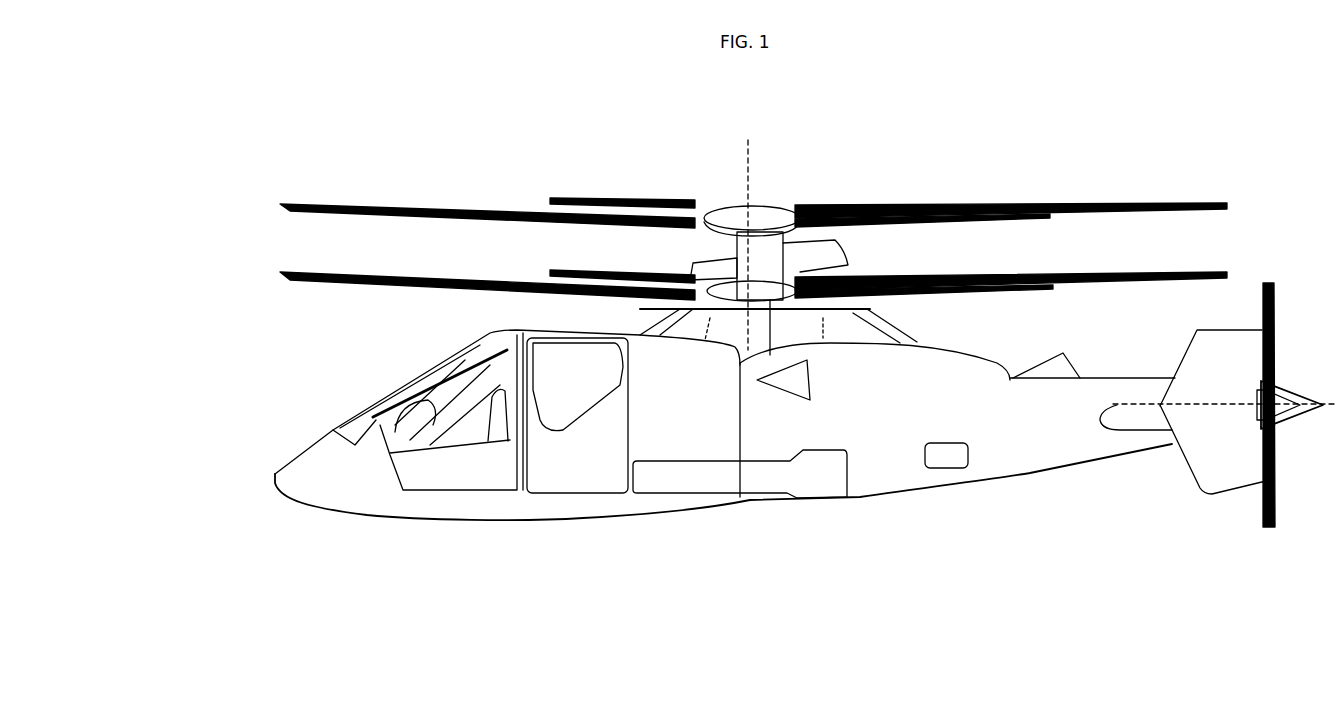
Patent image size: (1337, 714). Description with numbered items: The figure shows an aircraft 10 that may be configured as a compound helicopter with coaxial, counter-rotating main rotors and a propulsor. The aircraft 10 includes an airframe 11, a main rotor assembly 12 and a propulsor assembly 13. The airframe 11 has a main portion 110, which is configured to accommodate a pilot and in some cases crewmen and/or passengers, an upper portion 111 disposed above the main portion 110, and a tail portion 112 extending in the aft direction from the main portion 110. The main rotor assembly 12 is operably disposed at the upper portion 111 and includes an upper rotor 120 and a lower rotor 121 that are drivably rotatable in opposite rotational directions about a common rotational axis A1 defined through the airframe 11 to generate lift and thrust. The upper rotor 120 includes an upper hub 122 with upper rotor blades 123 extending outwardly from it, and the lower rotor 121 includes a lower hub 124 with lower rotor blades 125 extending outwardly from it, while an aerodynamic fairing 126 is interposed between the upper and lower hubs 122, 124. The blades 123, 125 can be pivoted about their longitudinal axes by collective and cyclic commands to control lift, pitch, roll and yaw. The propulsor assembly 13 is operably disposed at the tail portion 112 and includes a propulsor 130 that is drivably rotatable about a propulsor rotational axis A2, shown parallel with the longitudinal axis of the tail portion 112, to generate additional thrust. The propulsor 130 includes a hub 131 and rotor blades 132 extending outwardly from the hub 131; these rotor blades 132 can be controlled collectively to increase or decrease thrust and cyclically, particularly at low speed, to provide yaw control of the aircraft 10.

The aircraft 10 is at (280, 498).
The airframe 11 is at (696, 438).
The main portion 110 is at (723, 425).
The upper portion 111 is at (735, 322).
The tail portion 112 is at (1077, 417).
The main rotor assembly 12 is at (722, 215).
The upper rotor 120 is at (282, 206).
The lower rotor 121 is at (282, 273).
The upper hub 122 is at (760, 215).
The upper rotor blades 123 is at (922, 208).
The lower hub 124 is at (770, 300).
The lower rotor blades 125 is at (943, 276).
The aerodynamic fairing 126 is at (633, 275).
The propulsor assembly 13 is at (1273, 420).
The propulsor 130 is at (1266, 396).
The hub 131 is at (1290, 388).
The rotor blades 132 is at (1268, 298).
The common rotational axis A1 is at (748, 158).
The propulsor rotational axis A2 is at (1213, 404).